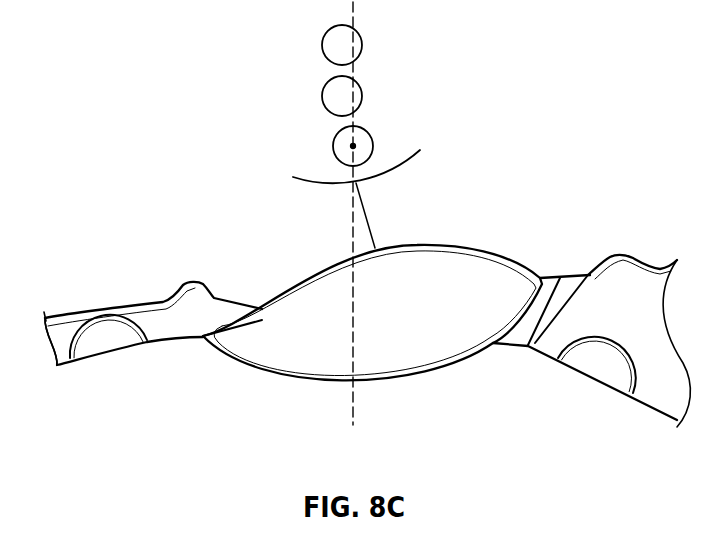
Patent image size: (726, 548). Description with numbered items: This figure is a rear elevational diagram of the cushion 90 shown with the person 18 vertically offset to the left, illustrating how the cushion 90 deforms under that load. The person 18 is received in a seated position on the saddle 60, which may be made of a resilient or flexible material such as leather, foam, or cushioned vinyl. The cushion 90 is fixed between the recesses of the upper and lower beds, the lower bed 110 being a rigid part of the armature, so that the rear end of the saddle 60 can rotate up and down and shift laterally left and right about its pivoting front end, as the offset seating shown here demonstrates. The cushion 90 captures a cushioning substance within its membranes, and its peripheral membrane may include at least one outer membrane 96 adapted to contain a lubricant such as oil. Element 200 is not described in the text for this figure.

The person 18 is at (352, 145).
The saddle 60 is at (157, 298).
The cushion 90 is at (445, 269).
The outer membrane 96 is at (223, 312).
The lower bed 110 is at (57, 367).
The aperture 200 is at (114, 340).